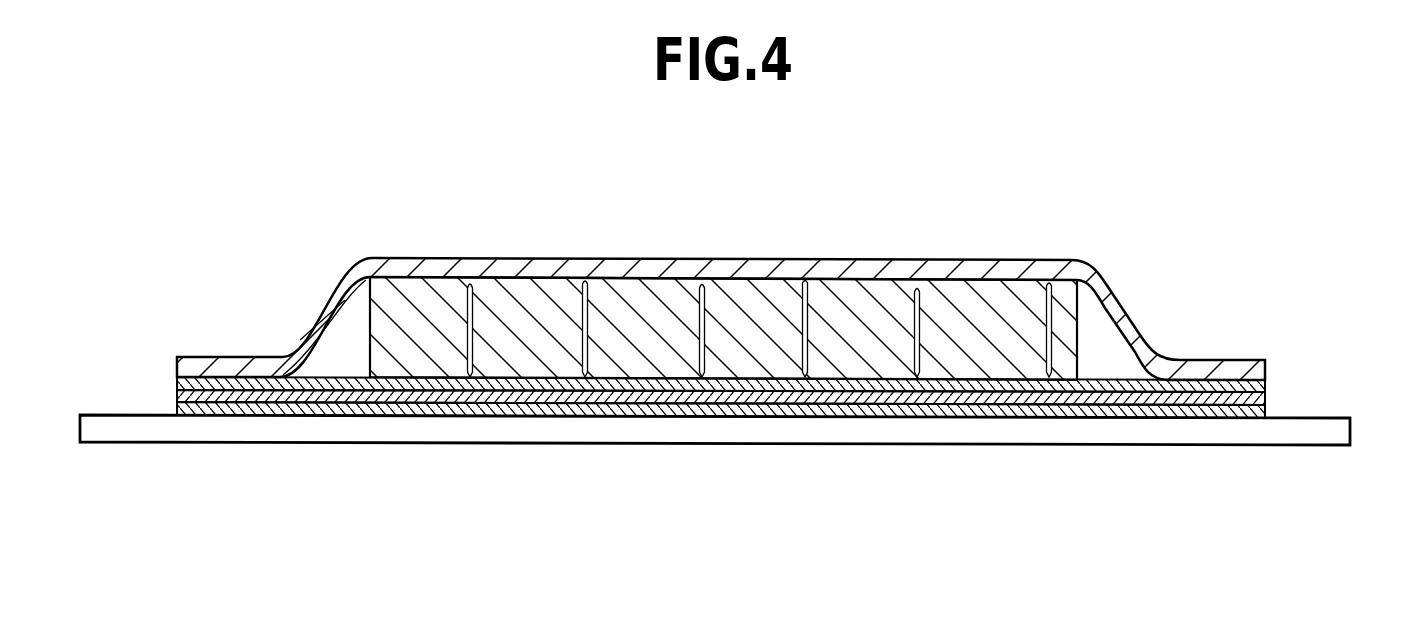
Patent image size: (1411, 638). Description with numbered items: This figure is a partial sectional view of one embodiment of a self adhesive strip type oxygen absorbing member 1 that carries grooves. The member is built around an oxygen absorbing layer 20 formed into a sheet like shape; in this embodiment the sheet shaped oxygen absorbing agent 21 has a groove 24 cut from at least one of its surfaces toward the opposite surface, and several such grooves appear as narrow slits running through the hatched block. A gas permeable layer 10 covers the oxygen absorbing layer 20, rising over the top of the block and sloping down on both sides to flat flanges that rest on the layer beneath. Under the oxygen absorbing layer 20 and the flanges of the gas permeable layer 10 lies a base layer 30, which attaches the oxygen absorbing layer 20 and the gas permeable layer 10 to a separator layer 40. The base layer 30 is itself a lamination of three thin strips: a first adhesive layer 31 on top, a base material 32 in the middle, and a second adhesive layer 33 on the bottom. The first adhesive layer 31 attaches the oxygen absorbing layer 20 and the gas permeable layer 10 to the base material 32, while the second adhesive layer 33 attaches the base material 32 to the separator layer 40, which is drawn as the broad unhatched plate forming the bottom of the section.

The heat dissipating module assembly 1 is at (721, 269).
The gas permeable layer 10 is at (738, 258).
The oxygen absorbing layer 20 is at (723, 278).
The heat conductive member 21 is at (860, 310).
The groove 24 is at (1050, 282).
The base layer 30 is at (788, 373).
The first adhesive layer 31 is at (1268, 385).
The base material 32 is at (1268, 397).
The second adhesive layer 33 is at (755, 404).
The separator layer 40 is at (1237, 432).